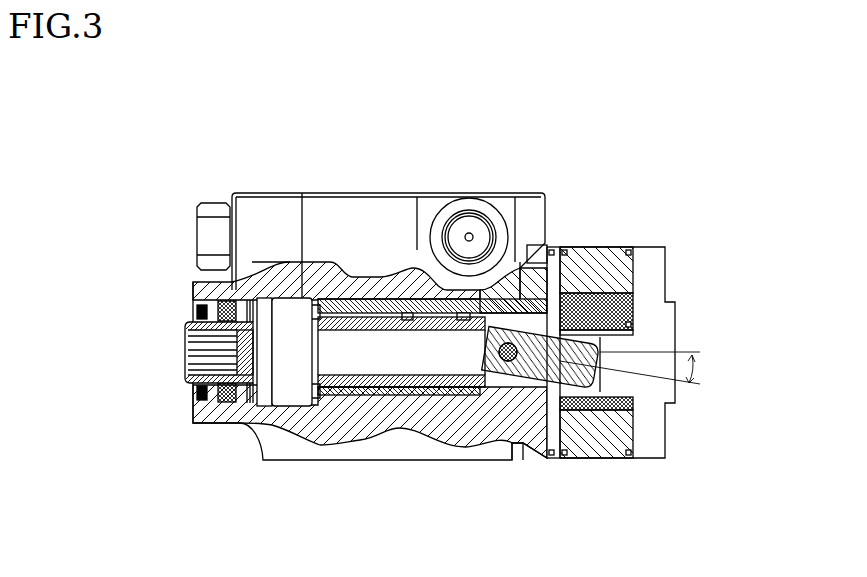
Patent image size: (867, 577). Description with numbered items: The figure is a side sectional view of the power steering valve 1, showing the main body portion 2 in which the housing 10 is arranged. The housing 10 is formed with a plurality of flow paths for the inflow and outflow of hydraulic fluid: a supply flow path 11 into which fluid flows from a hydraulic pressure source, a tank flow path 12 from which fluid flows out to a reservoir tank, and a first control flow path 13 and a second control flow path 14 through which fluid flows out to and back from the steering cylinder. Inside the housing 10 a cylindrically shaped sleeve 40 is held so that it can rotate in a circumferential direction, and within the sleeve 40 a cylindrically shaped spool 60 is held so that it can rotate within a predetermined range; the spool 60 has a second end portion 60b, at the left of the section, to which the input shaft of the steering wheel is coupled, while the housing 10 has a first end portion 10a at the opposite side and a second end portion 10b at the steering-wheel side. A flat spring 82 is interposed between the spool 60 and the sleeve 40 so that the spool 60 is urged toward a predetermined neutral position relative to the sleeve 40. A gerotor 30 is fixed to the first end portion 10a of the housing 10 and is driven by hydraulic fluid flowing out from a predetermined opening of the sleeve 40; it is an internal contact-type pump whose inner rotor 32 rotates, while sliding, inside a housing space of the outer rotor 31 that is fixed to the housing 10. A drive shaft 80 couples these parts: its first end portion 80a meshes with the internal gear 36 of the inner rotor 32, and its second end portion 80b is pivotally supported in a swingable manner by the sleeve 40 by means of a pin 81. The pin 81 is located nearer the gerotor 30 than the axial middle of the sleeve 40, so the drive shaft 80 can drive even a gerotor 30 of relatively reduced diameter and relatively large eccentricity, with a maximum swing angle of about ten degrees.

The power steering valve 1 is at (430, 299).
The main body portion 2 is at (358, 210).
The housing 10 is at (228, 413).
The first end portion of the housing 10a is at (557, 473).
The second end face of housing 10b is at (190, 431).
The supply flow path 11 is at (466, 430).
The tank flow path 12 is at (290, 417).
The first control flow path 13 is at (350, 305).
The second control flow path 14 is at (331, 300).
The gerotor 30 is at (641, 307).
The outer rotor 31 is at (617, 282).
The inner rotor 32 is at (618, 312).
The internal gear 36 is at (612, 353).
The sleeve 40 is at (420, 312).
The spool 60 is at (405, 415).
The second end portion of the spool 60b is at (174, 355).
The drive shaft 80 is at (590, 286).
The first end portion of the drive shaft 80a is at (628, 412).
The second end portion of the drive shaft 80b is at (480, 285).
The pin 81 is at (521, 280).
The flat spring 82 is at (293, 325).